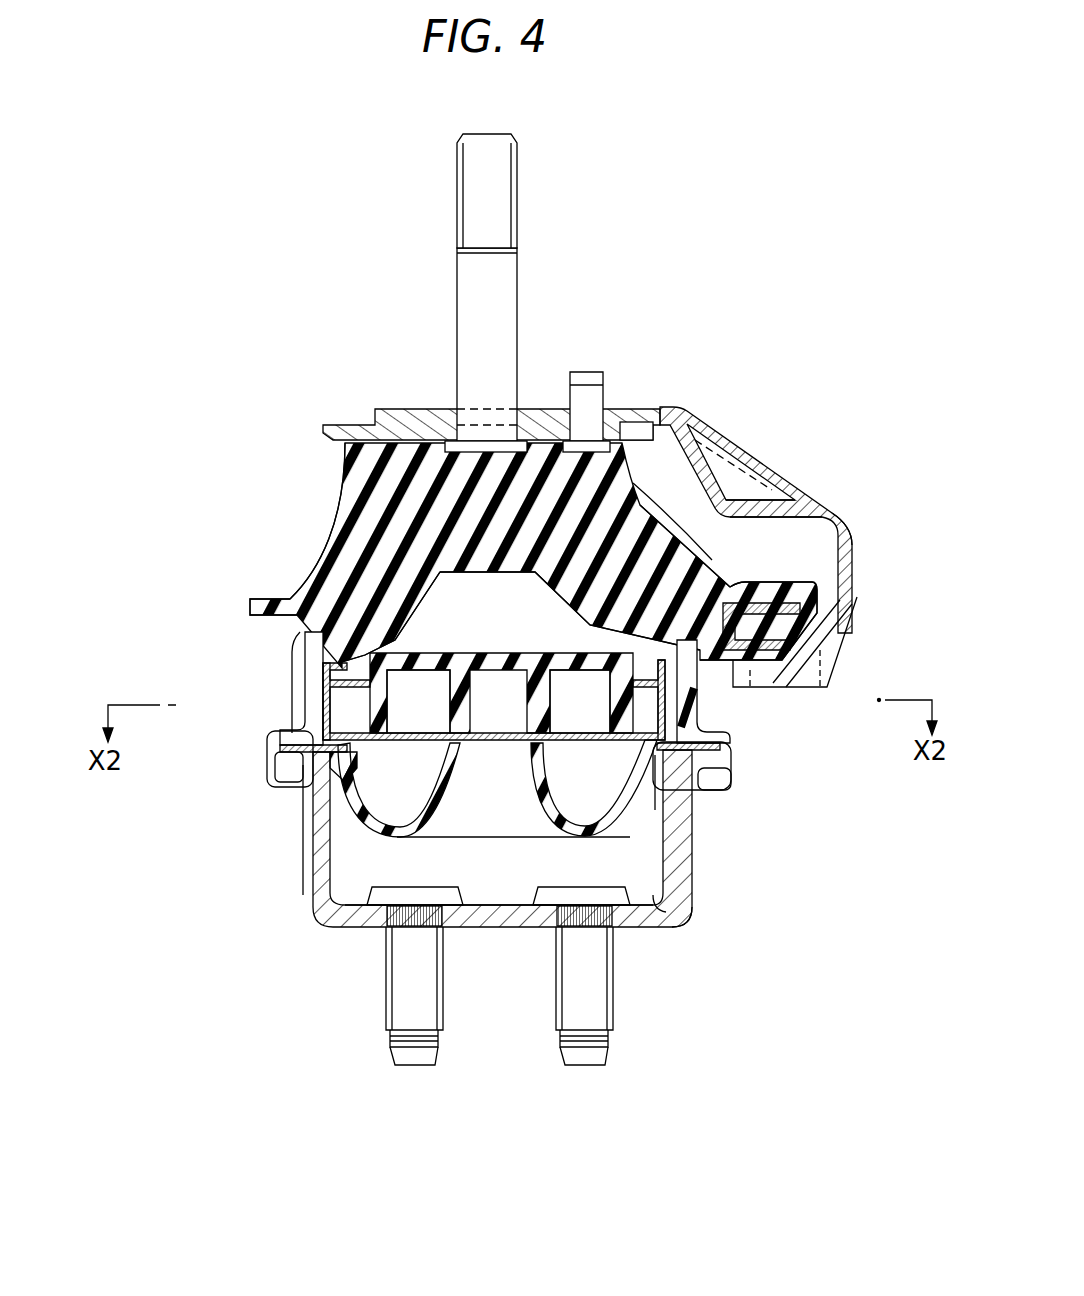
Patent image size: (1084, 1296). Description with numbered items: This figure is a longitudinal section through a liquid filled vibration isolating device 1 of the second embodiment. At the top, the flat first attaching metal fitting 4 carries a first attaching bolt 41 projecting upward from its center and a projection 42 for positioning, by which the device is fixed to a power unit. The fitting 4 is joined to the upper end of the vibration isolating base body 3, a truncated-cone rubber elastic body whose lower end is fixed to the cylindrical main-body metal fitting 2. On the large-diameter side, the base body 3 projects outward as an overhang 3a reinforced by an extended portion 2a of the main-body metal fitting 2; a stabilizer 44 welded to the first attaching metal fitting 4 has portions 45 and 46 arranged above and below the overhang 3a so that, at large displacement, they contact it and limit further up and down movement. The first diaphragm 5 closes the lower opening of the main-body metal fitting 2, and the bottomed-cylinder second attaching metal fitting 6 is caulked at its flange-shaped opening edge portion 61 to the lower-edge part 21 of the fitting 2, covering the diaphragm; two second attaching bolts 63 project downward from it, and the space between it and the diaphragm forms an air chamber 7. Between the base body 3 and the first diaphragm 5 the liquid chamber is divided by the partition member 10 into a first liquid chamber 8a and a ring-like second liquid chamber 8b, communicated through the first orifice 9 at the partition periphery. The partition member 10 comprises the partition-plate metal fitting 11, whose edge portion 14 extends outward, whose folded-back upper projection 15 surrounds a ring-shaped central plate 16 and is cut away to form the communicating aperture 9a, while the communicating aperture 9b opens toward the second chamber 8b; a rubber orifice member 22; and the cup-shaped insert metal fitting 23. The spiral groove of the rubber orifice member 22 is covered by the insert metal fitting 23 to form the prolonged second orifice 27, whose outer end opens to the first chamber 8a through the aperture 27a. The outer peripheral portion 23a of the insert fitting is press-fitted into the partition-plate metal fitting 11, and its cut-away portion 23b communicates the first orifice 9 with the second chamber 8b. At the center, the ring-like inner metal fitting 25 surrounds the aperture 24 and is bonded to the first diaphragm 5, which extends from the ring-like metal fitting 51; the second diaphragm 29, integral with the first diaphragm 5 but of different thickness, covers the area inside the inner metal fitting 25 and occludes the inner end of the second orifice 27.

The liquid filled vibration isolating device 1 is at (806, 164).
The main-body metal fitting 2 is at (300, 700).
The extended portion of the main-body metal fitting 2a is at (822, 584).
The vibration isolating base body 3 is at (348, 552).
The overhang 3a is at (812, 618).
The first attaching metal fitting 4 is at (340, 428).
The first diaphragm 5 is at (330, 908).
The second attaching metal fitting 6 is at (671, 915).
The air chamber 7 is at (527, 862).
The first liquid chamber 8a is at (656, 480).
The second liquid chamber 8b is at (666, 898).
The first orifice 9 is at (678, 686).
The communicating aperture 9a is at (323, 665).
The communicating aperture 9b is at (690, 710).
The partition member 10 is at (392, 640).
The partition-plate metal fitting 11 is at (290, 596).
The edge portion 14 is at (705, 746).
The upper projection 15 is at (780, 510).
The central plate 16 is at (710, 580).
The lower-edge part 21 is at (272, 760).
The rubber orifice member 22 is at (336, 507).
The insert metal fitting 23 is at (318, 896).
The outer peripheral portion 23a is at (313, 790).
The cut-away portion 23b is at (662, 842).
The aperture 24 is at (450, 830).
The inner metal fitting 25 is at (580, 744).
The second orifice 27 is at (415, 702).
The aperture 27a is at (550, 651).
The second diaphragm 29 is at (498, 745).
The first attaching bolt 41 is at (500, 200).
The projection 42 is at (587, 375).
The stabilizer 44 is at (652, 407).
The portion of the stabilizer 45 is at (846, 528).
The portion of the stabilizer 46 is at (808, 668).
The ring-like metal fitting 51 is at (280, 784).
The opening edge portion 61 is at (720, 772).
The second attaching bolts 63 is at (418, 1015).